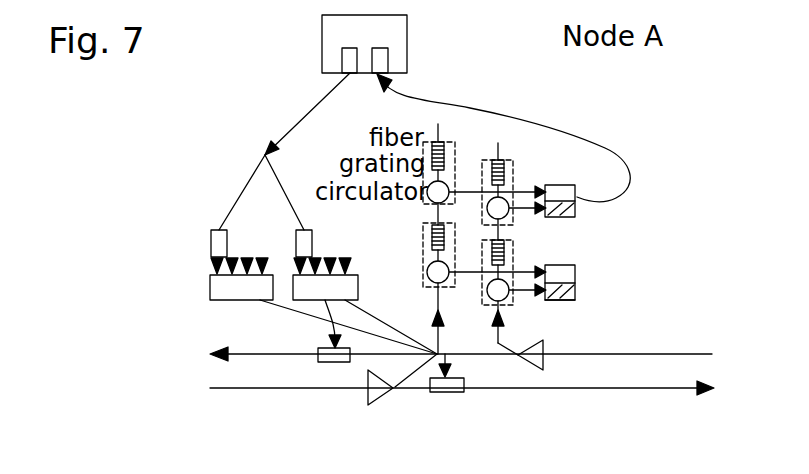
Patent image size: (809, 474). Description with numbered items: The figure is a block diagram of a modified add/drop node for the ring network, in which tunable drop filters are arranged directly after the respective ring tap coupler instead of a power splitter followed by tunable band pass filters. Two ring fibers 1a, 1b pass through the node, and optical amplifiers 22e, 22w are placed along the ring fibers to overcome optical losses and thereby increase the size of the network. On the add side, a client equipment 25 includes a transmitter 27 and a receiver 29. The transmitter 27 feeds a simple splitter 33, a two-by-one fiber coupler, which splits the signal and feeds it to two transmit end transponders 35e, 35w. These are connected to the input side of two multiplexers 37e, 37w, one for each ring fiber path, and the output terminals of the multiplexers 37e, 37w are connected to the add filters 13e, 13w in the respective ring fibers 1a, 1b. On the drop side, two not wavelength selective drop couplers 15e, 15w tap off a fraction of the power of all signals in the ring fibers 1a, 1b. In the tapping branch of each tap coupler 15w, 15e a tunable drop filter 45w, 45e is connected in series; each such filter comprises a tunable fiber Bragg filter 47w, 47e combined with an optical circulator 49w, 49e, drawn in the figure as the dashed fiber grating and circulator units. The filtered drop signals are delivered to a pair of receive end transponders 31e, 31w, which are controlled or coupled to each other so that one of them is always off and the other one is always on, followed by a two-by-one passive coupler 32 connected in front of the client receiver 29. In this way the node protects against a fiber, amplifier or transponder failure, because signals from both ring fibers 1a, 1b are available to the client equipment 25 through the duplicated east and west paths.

The client equipment 25 is at (322, 29).
The transmitter 27 is at (342, 66).
The receiver 29 is at (388, 66).
The simple splitter 33 is at (268, 157).
The transmit end transponder 35e is at (213, 230).
The transmit end transponder 35w is at (312, 242).
The multiplexer 37e is at (210, 290).
The multiplexer 37w is at (342, 304).
The add filter 13e is at (318, 352).
The add filter 13w is at (447, 393).
The drop coupler 15e is at (389, 390).
The drop coupler 15w is at (512, 312).
The optical amplifier 22e is at (374, 404).
The optical amplifier 22w is at (545, 352).
The tunable fiber Bragg filter 47e is at (424, 228).
The tunable fiber Bragg filter 47w is at (483, 161).
The tunable drop filter 45e is at (424, 259).
The tunable drop filter 45w is at (514, 180).
The optical circulator 49e is at (432, 286).
The optical circulator 49w is at (482, 300).
The receive end transponder 31e is at (554, 272).
The receive end transponder 31w is at (572, 300).
The passive coupler 32 is at (600, 197).
The ring fiber 1a is at (658, 354).
The ring fiber 1b is at (640, 390).